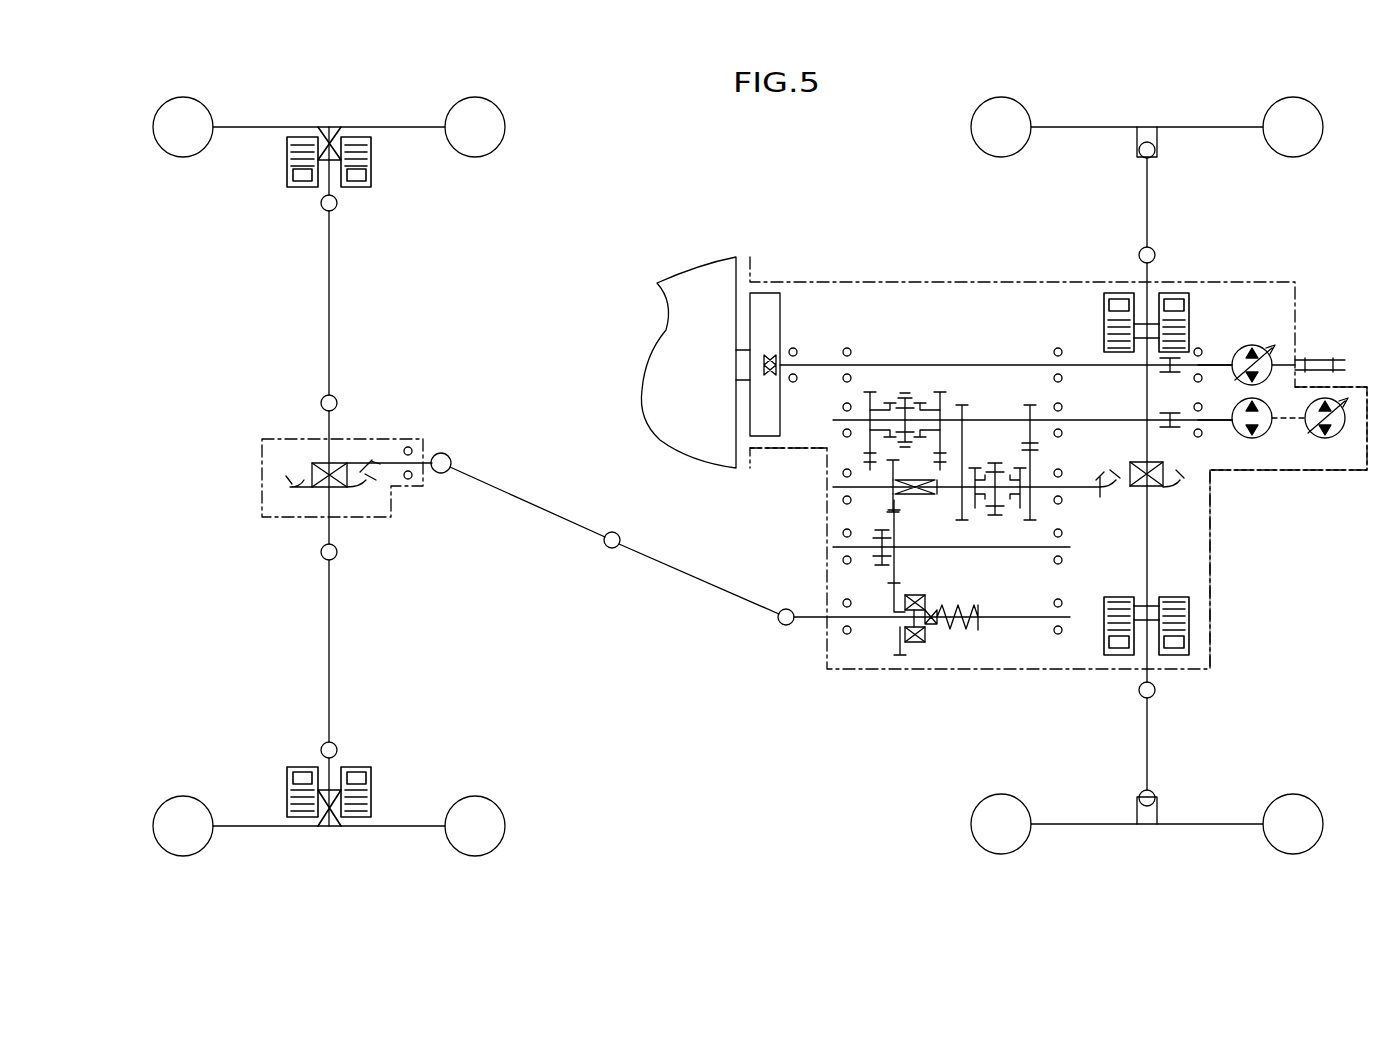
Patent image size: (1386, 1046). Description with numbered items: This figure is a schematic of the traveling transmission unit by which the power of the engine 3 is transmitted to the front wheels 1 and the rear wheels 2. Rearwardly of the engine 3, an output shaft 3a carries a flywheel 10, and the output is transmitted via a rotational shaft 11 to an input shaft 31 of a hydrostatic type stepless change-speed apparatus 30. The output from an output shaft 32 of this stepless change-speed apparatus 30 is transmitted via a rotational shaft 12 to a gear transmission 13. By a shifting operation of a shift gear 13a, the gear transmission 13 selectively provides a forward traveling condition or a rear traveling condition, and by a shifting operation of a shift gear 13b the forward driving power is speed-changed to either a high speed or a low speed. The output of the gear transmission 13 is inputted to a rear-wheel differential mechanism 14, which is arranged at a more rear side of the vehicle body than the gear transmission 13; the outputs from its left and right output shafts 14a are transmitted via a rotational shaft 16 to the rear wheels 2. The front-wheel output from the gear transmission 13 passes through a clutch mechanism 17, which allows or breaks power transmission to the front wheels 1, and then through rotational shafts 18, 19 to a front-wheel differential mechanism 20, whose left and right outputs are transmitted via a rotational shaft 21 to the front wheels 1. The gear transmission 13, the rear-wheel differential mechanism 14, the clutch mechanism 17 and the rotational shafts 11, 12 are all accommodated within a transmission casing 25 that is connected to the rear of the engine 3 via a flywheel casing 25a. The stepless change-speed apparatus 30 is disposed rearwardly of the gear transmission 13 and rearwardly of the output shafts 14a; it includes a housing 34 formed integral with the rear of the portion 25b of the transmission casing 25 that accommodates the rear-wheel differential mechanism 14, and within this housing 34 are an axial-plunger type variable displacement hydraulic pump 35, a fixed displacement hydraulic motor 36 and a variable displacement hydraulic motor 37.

The front wheels 1 is at (498, 132).
The rear wheels 2 is at (975, 130).
The engine 3 is at (692, 278).
The output shaft 3a is at (738, 365).
The flywheel 10 is at (775, 333).
The rotational shaft 11 is at (956, 365).
The rotational shaft 12 is at (1075, 420).
The gear transmission 13 is at (944, 315).
The shift gear 13a is at (999, 446).
The shift gear 13b is at (908, 384).
The rear-wheel differential mechanism 14 is at (1182, 499).
The output shafts 14a is at (1145, 450).
The rotational shaft 16 is at (1150, 200).
The clutch mechanism 17 is at (858, 574).
The rotational shaft 18 is at (690, 588).
The rotational shaft 19 is at (515, 497).
The front-wheel differential mechanism 20 is at (379, 497).
The rotational shaft 21 is at (332, 320).
The transmission casing 25 is at (1018, 282).
The flywheel casing 25a is at (778, 452).
The portion of the transmission casing 25b is at (1327, 478).
The hydrostatic type stepless change-speed apparatus 30 is at (1290, 370).
The input shaft 31 is at (1218, 355).
The output shaft 32 is at (1212, 440).
The housing 34 is at (1279, 569).
The variable displacement hydraulic pump 35 is at (1267, 346).
The fixed displacement hydraulic motor 36 is at (1262, 440).
The variable displacement hydraulic motor 37 is at (1338, 440).